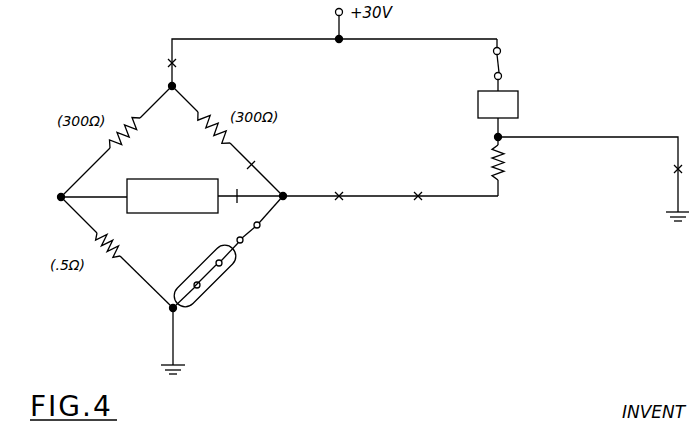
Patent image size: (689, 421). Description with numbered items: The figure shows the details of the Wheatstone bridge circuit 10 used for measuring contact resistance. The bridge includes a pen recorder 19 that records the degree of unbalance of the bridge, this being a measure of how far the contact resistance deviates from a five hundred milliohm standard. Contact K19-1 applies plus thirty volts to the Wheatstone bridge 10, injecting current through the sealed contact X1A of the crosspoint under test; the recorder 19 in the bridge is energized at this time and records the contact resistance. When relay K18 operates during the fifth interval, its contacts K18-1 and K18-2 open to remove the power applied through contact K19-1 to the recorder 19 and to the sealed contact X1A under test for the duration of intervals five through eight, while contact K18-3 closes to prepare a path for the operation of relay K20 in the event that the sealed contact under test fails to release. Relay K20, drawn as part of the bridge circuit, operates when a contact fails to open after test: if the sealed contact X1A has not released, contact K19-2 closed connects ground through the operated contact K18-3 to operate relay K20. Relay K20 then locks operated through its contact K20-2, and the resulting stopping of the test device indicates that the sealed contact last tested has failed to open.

The Wheatstone bridge circuit 10 is at (339, 265).
The pen recorder 19 is at (172, 213).
The contact K19-1 is at (197, 65).
The contact K18-2 is at (238, 141).
The contact K18-1 is at (250, 205).
The contact K18-3 is at (331, 206).
The contact K19-2 is at (439, 206).
The relay K20 is at (498, 117).
The contact K20-2 is at (593, 179).
The sealed contact X1A is at (226, 253).